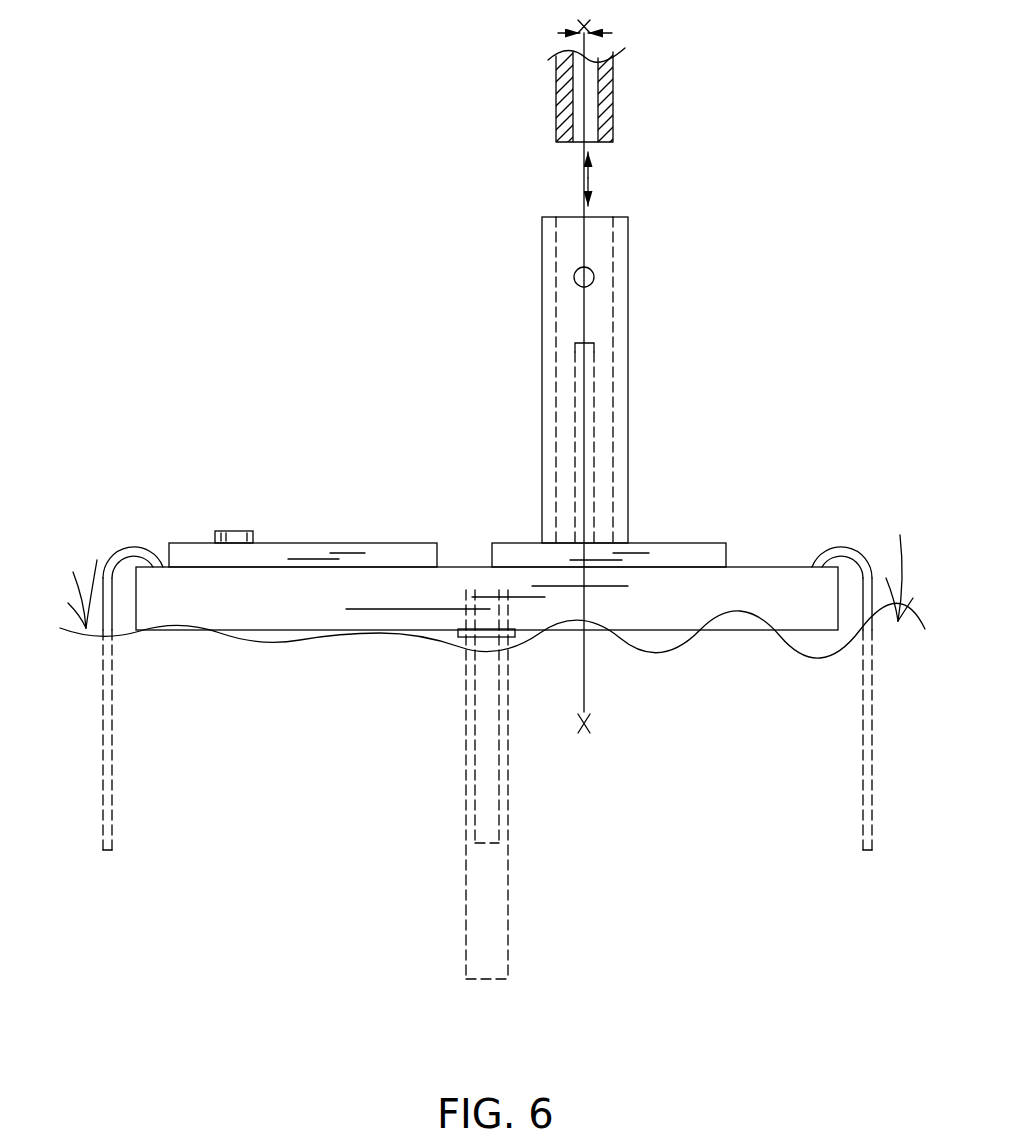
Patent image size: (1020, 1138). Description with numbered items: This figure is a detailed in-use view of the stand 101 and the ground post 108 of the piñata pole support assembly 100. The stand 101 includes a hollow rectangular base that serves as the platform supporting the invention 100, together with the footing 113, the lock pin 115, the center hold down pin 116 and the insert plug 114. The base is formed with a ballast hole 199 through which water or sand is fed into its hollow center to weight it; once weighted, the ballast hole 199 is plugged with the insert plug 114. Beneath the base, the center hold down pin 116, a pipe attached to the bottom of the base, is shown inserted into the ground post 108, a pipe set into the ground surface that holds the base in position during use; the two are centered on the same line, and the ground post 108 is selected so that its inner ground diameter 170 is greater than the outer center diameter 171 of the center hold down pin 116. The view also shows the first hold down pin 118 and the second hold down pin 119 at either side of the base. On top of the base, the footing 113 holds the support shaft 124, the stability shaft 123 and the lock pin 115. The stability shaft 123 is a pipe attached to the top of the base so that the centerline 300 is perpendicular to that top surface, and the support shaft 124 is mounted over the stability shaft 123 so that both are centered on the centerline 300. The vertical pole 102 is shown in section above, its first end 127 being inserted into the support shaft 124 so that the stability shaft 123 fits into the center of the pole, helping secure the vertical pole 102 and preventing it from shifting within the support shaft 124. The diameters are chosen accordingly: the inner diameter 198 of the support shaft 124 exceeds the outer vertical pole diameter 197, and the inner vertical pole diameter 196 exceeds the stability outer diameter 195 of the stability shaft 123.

The piñata pole support assembly 100 is at (242, 238).
The stand 101 is at (165, 518).
The vertical pole 102 is at (556, 70).
The ground post 108 is at (508, 928).
The footing 113 is at (645, 532).
The insert plug 114 is at (235, 535).
The lock pin 115 is at (594, 277).
The center hold down pin 116 is at (487, 775).
The first hold down pin 118 is at (863, 770).
The second hold down pin 119 is at (112, 802).
The stability shaft 123 is at (587, 430).
The support shaft 124 is at (628, 315).
The first end 127 is at (556, 520).
The inner ground diameter 170 is at (390, 883).
The outer center diameter 171 is at (560, 825).
The stability outer diameter 195 is at (658, 347).
The inner vertical pole diameter 196 is at (490, 93).
The outer vertical pole diameter 197 is at (470, 127).
The inner diameter 198 is at (612, 237).
The ballast hole 199 is at (255, 539).
The centerline 300 is at (584, 668).